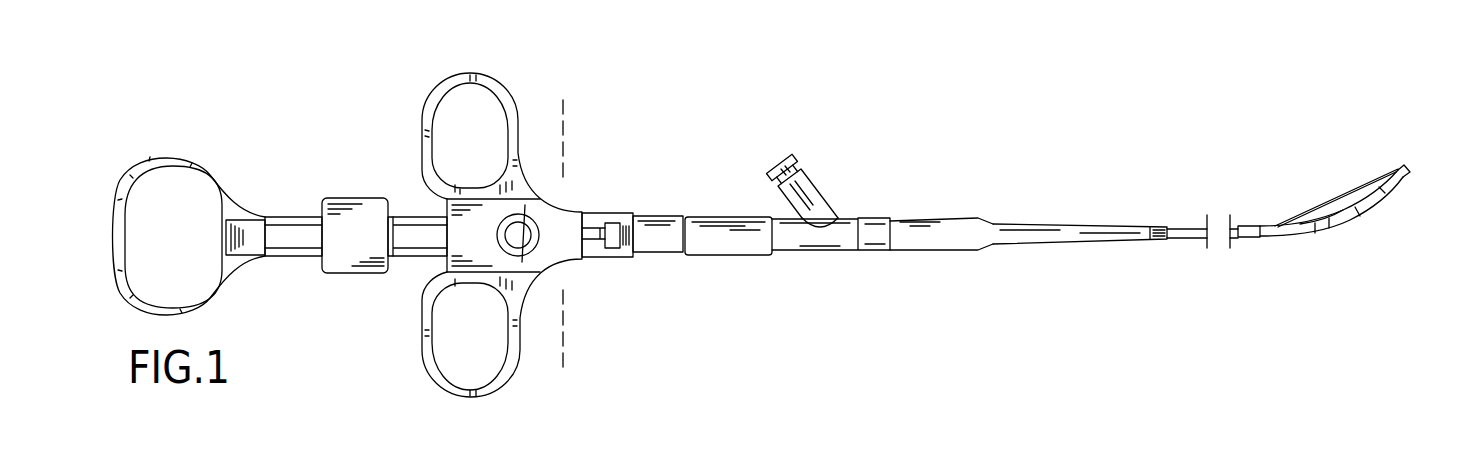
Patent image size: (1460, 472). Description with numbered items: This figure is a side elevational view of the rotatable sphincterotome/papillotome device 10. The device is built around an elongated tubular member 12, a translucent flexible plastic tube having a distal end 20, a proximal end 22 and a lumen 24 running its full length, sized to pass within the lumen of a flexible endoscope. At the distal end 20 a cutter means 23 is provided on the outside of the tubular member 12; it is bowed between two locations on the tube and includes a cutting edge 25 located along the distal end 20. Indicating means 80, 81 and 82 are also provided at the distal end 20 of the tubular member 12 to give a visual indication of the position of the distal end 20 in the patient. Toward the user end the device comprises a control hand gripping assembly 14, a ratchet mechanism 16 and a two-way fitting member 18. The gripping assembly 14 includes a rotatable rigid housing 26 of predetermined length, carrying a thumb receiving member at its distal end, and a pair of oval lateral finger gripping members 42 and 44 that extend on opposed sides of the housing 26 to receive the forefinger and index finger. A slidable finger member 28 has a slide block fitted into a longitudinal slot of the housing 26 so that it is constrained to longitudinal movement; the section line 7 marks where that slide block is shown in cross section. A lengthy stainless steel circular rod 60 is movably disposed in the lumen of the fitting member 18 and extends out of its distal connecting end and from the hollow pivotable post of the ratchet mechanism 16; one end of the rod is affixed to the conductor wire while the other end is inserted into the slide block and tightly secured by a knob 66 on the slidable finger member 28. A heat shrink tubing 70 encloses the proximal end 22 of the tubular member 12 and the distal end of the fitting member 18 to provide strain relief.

The sphincterotome/papillotome device 10 is at (931, 79).
The elongated tubular member 12 is at (1186, 240).
The control hand gripping assembly 14 is at (520, 73).
The ratchet mechanism 16 is at (739, 261).
The two-way fitting member 18 is at (818, 171).
The distal end 20 is at (1361, 226).
The proximal end 22 is at (923, 212).
The cutter means 23 is at (1332, 196).
The lumen 24 is at (1195, 224).
The cutting edge 25 is at (1322, 204).
The rotatable rigid housing 26 is at (420, 255).
The slidable finger member 28 is at (411, 151).
The lateral finger gripping member 42 is at (431, 127).
The lateral finger gripping member 44 is at (490, 384).
The circular rod 60 is at (588, 252).
The knob 66 is at (535, 231).
The heat shrink tubing 70 is at (1007, 254).
The indicating means 80 is at (1247, 240).
The indicating means 81 is at (1404, 178).
The indicating means 82 is at (1328, 229).
The section line 7- 7 is at (565, 98).